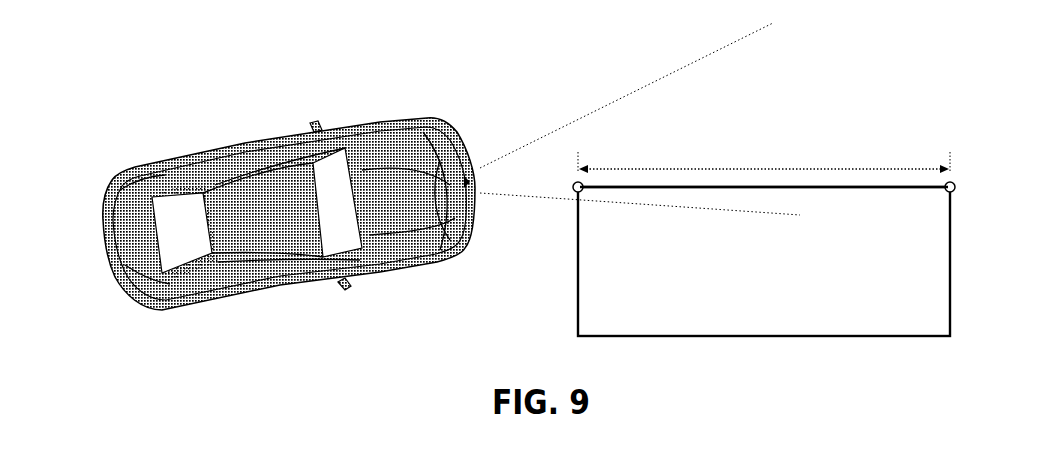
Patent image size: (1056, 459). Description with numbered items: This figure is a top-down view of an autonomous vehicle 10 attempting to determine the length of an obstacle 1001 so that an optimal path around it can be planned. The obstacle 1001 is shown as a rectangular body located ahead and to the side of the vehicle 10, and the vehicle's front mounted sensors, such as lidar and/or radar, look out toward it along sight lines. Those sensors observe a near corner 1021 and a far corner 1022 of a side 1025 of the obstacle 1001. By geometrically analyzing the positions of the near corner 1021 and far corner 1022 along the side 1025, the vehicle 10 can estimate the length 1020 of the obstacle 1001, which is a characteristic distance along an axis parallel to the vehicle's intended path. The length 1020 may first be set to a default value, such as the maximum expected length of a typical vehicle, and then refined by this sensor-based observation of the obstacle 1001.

The autonomous vehicle 10 is at (222, 225).
The obstacle 1001 is at (790, 258).
The length 1020 is at (776, 168).
The near corner 1021 is at (573, 184).
The far corner 1022 is at (954, 182).
The side 1025 is at (880, 185).